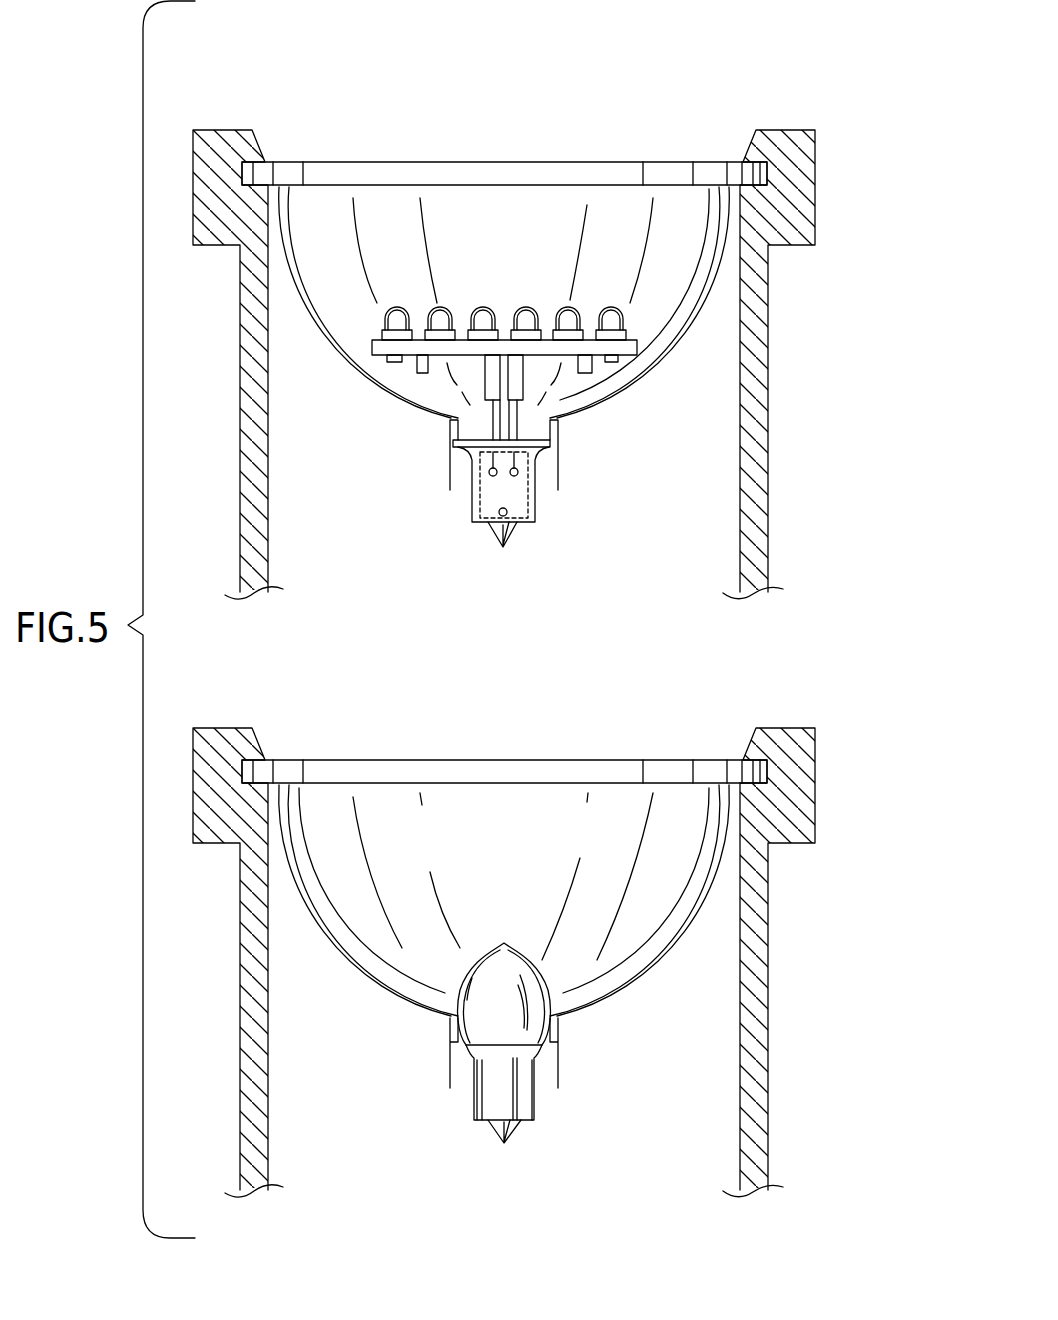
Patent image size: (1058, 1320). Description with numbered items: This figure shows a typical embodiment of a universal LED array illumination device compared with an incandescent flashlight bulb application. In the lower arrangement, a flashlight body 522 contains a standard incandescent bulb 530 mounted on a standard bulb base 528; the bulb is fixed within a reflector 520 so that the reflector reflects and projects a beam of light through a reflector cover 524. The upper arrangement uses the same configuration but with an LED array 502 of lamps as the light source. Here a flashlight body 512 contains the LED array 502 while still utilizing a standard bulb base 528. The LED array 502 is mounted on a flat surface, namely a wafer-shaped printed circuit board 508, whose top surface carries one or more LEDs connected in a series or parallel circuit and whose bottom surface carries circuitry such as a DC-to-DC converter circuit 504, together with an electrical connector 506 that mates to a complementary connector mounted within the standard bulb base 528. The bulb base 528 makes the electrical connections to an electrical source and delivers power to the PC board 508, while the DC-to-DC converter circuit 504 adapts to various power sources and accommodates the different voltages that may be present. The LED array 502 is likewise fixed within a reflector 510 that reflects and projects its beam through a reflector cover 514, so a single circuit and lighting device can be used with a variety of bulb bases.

The LED array 502 is at (502, 309).
The DC-to-DC converter circuit 504 is at (425, 374).
The connector 506 is at (490, 431).
The printed circuit (PC) board 508 is at (628, 357).
The reflector 510 is at (655, 366).
The flashlight body 512 is at (748, 148).
The reflector cover 514 is at (538, 161).
The reflector 520 is at (378, 985).
The flashlight body 522 is at (268, 1110).
The reflector cover 524 is at (405, 758).
The standard bulb base 528 is at (535, 500).
The standard incandescent bulb 530 is at (519, 950).